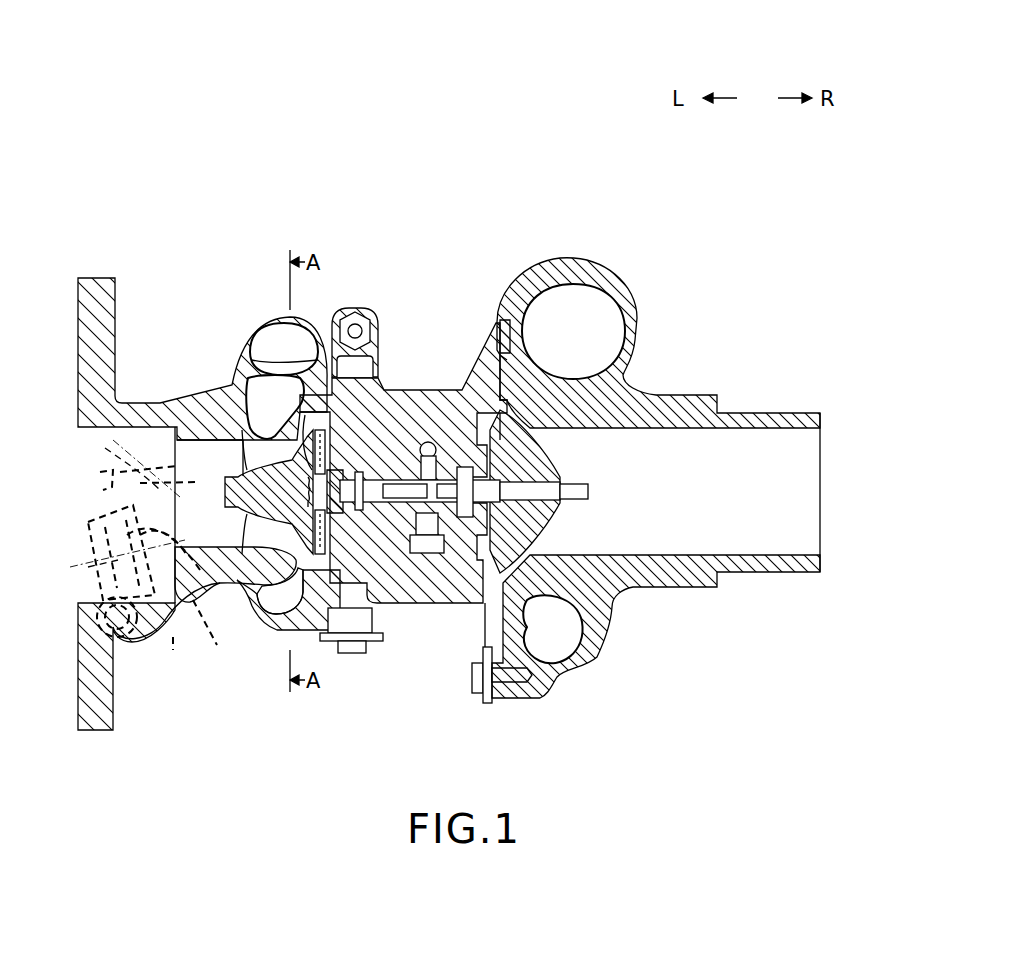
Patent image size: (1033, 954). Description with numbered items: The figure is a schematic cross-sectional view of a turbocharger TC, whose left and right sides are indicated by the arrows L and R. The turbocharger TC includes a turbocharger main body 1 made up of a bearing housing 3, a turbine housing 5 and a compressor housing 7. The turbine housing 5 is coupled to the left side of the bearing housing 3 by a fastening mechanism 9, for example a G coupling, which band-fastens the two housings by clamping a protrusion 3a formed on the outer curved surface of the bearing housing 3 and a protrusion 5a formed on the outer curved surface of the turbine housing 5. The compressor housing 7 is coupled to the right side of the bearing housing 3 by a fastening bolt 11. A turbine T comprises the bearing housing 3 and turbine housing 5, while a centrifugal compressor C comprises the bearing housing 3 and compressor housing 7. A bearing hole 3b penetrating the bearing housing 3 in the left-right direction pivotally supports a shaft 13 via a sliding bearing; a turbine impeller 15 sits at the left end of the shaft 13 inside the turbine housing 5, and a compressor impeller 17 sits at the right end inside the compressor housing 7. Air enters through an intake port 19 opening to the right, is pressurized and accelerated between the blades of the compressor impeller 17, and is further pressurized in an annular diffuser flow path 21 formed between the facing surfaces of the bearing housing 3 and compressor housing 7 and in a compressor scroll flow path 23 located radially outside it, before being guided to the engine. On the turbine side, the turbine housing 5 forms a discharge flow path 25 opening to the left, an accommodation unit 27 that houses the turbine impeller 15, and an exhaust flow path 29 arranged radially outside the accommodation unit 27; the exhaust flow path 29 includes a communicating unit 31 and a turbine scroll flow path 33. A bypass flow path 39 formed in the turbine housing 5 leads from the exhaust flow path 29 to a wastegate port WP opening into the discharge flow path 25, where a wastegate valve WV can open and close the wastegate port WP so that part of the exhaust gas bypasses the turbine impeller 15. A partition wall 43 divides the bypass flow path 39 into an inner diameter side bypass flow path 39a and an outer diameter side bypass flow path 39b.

The turbocharger TC is at (141, 70).
The turbocharger main body 1 is at (200, 118).
The turbine T is at (516, 477).
The centrifugal compressor C is at (516, 477).
The bearing housing 3 is at (413, 390).
The protrusion 3a is at (365, 380).
The bearing hole 3b is at (355, 512).
The turbine housing 5 is at (93, 278).
The protrusion 5a is at (340, 377).
The compressor housing 7 is at (577, 258).
The fastening mechanism 9 is at (516, 477).
The fastening bolt 11 is at (481, 697).
The shaft 13 is at (397, 515).
The turbine impeller 15 is at (242, 513).
The compressor impeller 17 is at (590, 513).
The intake port 19 is at (820, 523).
The diffuser flow path 21 is at (503, 400).
The compressor scroll flow path 23 is at (567, 623).
The discharge flow path 25 is at (122, 437).
The accommodation unit 27 is at (270, 443).
The exhaust flow path 29 is at (277, 337).
The communicating unit 31 is at (290, 412).
The turbine scroll flow path 33 is at (270, 600).
The bypass flow path 39 is at (108, 522).
The inner diameter side bypass flow path 39a is at (105, 448).
The outer diameter side bypass flow path 39b is at (98, 620).
The wastegate port WP is at (150, 535).
The wastegate valve WV is at (92, 545).
The partition wall 43 is at (88, 567).